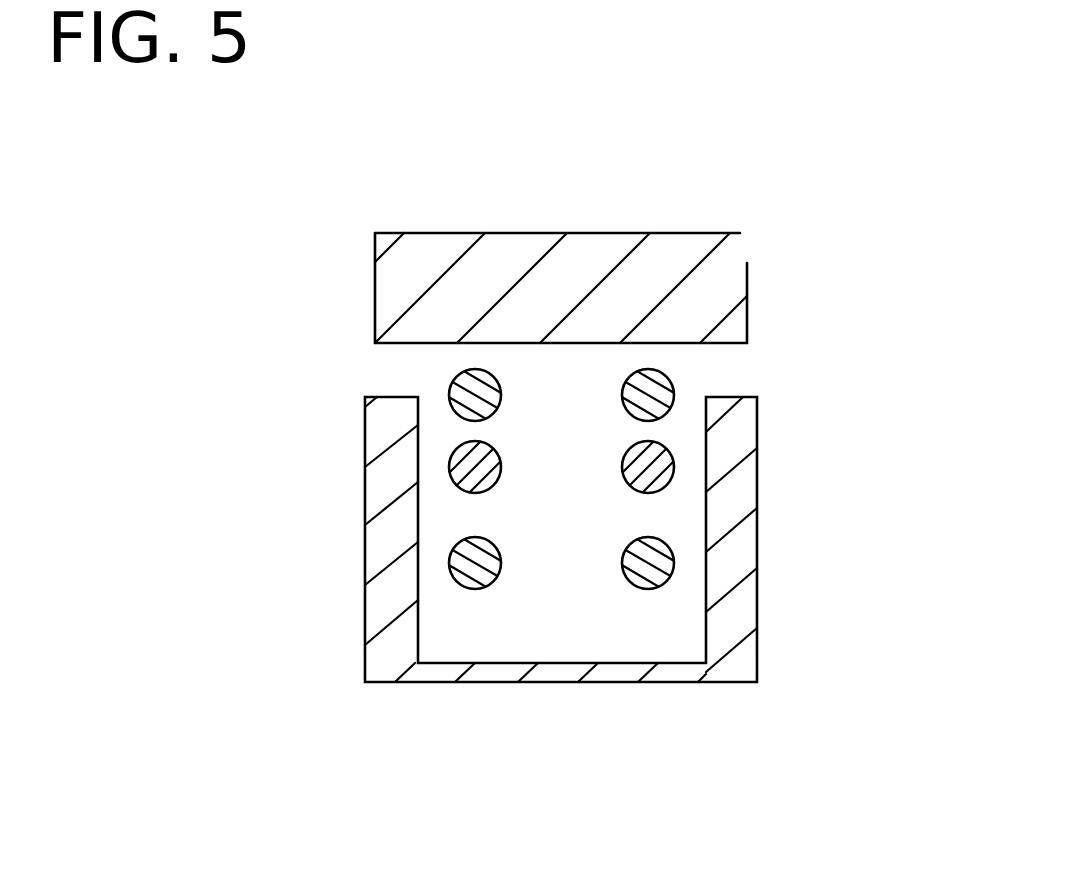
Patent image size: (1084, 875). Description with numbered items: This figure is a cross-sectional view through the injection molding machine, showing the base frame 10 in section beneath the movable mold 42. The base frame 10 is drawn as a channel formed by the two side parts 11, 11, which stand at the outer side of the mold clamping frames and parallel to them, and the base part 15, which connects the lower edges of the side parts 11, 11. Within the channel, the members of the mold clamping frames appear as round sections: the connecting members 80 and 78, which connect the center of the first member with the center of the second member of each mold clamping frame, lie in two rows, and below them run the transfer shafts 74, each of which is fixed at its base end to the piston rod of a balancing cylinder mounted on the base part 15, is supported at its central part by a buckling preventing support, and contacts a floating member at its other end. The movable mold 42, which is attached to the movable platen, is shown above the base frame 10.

The movable mold 42 is at (623, 233).
The base frame 10 is at (790, 558).
The side parts 11 is at (362, 616).
The base part 15 is at (562, 682).
The connecting member 80 is at (452, 380).
The connecting member 78 is at (452, 448).
The transfer shaft 74 is at (475, 589).